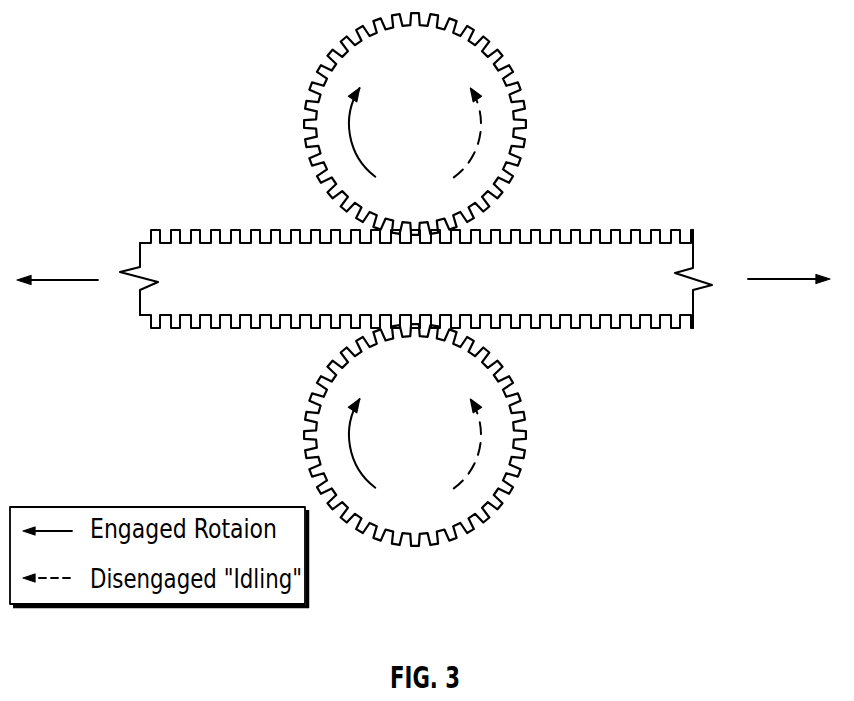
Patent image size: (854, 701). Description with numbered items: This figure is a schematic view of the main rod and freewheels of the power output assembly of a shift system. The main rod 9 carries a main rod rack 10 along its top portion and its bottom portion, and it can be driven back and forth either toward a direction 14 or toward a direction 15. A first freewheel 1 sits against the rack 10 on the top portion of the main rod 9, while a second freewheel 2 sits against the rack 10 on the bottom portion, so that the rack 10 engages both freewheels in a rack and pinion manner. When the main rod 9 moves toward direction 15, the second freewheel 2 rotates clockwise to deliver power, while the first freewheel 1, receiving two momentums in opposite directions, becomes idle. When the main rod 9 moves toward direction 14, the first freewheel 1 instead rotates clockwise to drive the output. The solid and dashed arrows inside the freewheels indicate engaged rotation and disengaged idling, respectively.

The first freewheel 1 is at (528, 125).
The second freewheel 2 is at (527, 450).
The main rod 9 is at (416, 294).
The main rod rack 10 is at (595, 232).
The direction 14 is at (60, 280).
The direction 15 is at (790, 279).